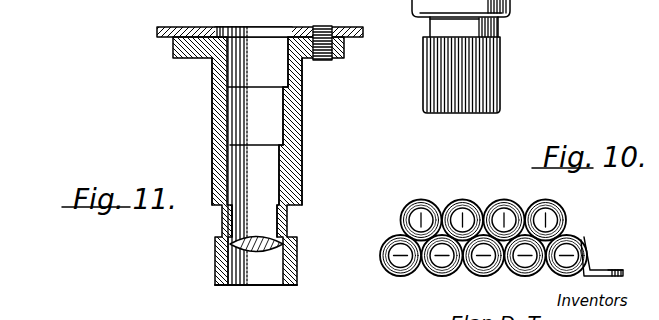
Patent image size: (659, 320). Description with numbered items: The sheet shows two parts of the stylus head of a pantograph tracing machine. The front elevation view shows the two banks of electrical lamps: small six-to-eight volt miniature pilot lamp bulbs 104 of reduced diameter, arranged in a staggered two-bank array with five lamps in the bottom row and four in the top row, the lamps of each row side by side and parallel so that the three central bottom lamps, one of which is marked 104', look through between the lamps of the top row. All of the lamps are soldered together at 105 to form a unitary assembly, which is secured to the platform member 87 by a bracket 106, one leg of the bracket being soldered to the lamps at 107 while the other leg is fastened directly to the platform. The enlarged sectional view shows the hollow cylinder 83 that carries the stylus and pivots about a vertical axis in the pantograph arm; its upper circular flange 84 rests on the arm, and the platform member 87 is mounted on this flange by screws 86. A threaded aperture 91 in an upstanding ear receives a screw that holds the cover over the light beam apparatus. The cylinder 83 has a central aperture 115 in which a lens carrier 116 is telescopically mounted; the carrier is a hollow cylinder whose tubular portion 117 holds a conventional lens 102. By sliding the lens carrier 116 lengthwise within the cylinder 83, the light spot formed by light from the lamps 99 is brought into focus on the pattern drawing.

In FIG. 11, the hollow cylinder 83 is at (213, 133).
In FIG. 11, the upper circular flange 84 is at (173, 48).
In FIG. 11, the screws 86 is at (325, 32).
In FIG. 11, the platform member 87 is at (197, 26).
In FIG. 11, the threaded aperture 91 is at (175, 142).
In FIG. 10, the lamps 99 is at (484, 233).
In FIG. 11, the lens 102 is at (265, 257).
In FIG. 10, the miniature pilot lamp bulb 104 is at (483, 239).
In FIG. 10, the roller 104' is at (483, 268).
In FIG. 10, the solder 105 is at (483, 212).
In FIG. 10, the bracket 106 is at (602, 271).
In FIG. 10, the solder 107 is at (585, 242).
In FIG. 11, the central aperture 115 is at (283, 72).
In FIG. 11, the lens carrier 116 is at (287, 163).
In FIG. 11, the tubular portion 117 is at (275, 222).